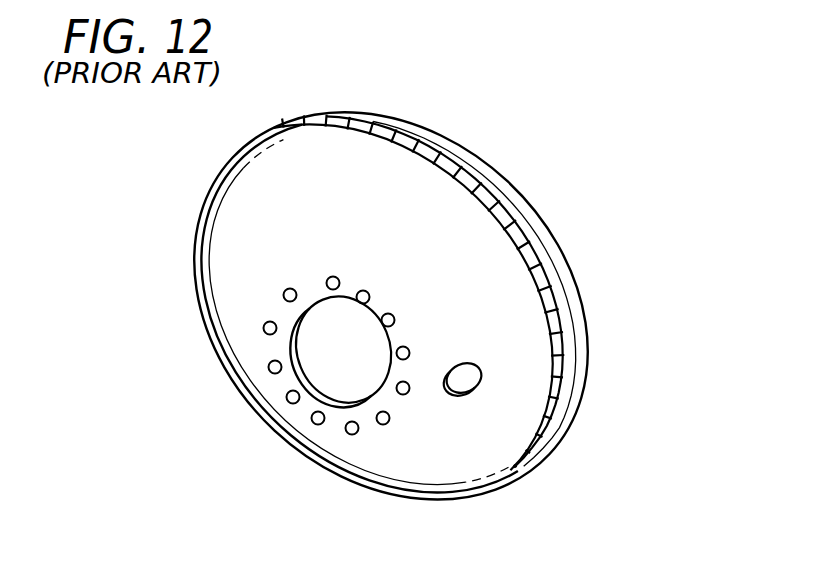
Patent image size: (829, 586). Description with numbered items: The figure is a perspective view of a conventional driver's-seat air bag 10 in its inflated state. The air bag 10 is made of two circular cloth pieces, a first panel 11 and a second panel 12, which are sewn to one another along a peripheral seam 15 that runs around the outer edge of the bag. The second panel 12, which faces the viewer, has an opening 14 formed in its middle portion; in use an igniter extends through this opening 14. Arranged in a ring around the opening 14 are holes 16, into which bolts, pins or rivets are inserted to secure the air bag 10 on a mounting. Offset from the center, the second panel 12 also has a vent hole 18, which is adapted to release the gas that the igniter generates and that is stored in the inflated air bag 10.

The air bag 10 is at (556, 220).
The first panel 11 is at (573, 323).
The second panel 12 is at (505, 462).
The opening 14 is at (335, 367).
The peripheral seam 15 is at (437, 157).
The holes 16 is at (334, 277).
The vent hole 18 is at (466, 396).